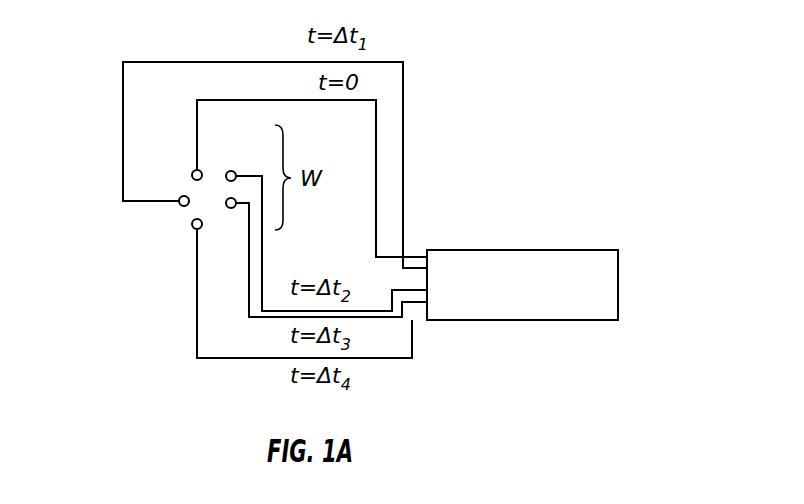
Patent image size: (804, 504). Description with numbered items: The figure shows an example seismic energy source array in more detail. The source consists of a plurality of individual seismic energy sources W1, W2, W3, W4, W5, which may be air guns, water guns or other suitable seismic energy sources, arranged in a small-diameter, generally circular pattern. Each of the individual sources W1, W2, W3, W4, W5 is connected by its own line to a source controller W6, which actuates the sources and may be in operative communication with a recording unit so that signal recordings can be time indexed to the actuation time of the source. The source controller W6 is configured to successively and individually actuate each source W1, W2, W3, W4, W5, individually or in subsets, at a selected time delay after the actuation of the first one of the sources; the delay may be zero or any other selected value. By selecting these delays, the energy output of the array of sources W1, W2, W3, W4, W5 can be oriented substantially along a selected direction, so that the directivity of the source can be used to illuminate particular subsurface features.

The individual seismic energy source W1 is at (192, 172).
The individual seismic energy source W2 is at (230, 170).
The individual seismic energy source W3 is at (180, 205).
The individual seismic energy source W4 is at (193, 228).
The individual seismic energy source W5 is at (230, 209).
The source controller W6 is at (620, 284).